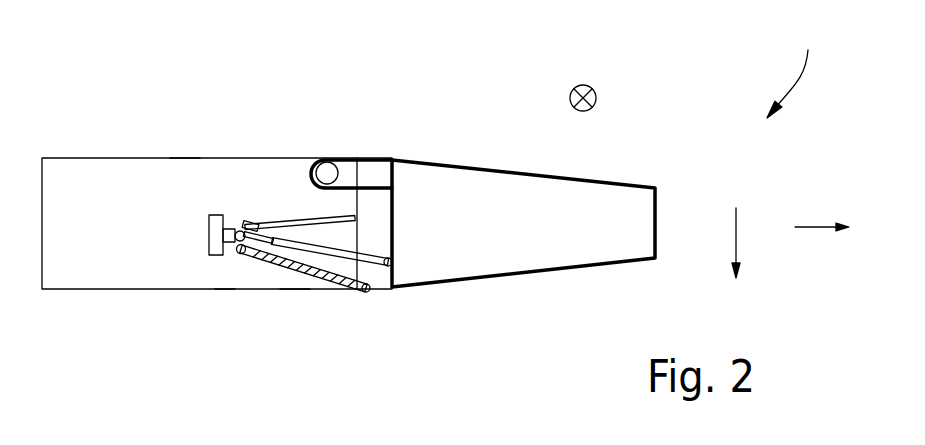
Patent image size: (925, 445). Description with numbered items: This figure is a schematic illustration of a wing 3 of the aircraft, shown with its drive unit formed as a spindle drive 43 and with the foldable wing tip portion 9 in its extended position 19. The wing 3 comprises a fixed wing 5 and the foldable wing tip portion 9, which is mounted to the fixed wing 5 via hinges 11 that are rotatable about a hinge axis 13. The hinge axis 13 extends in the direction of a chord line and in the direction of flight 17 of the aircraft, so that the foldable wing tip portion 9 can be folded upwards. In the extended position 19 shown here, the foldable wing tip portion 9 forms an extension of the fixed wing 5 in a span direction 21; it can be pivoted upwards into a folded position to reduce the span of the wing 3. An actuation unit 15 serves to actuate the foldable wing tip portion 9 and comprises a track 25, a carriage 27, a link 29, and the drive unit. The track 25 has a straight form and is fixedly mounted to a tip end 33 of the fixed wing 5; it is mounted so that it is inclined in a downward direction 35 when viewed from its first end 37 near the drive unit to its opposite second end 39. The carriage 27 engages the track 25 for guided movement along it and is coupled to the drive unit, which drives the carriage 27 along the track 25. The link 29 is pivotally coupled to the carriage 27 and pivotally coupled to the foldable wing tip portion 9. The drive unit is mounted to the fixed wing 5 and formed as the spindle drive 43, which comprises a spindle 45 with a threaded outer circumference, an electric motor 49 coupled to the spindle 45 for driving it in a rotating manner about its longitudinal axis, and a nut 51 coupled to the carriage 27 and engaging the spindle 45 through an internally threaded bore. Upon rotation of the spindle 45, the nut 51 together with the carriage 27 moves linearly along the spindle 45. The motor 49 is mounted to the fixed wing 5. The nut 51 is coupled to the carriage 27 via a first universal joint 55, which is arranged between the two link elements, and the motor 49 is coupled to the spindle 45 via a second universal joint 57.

The wing 3 is at (88, 95).
The fixed wing 5 is at (66, 219).
The foldable wing tip portion 9 is at (543, 237).
The hinges 11 is at (327, 177).
The hinge axis 13 is at (327, 173).
The actuation unit 15 is at (293, 328).
The direction of flight 17 is at (584, 85).
The extended position 19 is at (795, 72).
The span direction 21 is at (813, 224).
The track 25 is at (327, 283).
The carriage 27 is at (250, 224).
The link 29 is at (370, 255).
The tip end 33 is at (178, 112).
The downward direction 35 is at (737, 228).
The first end 37 is at (239, 254).
The second end 39 is at (364, 292).
The spindle drive 43 is at (215, 286).
The spindle 45 is at (292, 220).
The electric motor 49 is at (215, 236).
The nut 51 is at (244, 226).
The first universal joint 55 is at (250, 226).
The second universal joint 57 is at (237, 233).